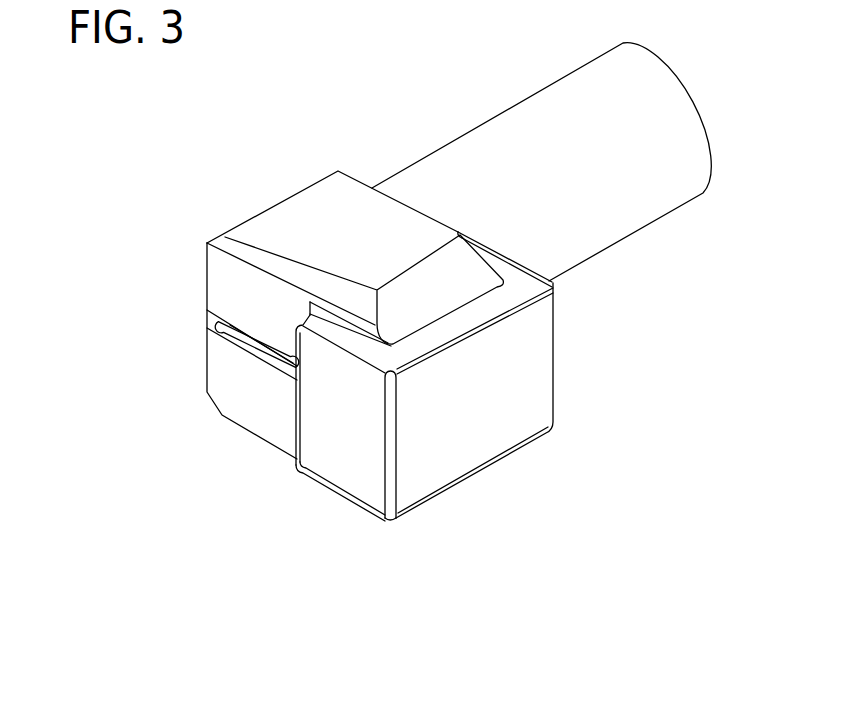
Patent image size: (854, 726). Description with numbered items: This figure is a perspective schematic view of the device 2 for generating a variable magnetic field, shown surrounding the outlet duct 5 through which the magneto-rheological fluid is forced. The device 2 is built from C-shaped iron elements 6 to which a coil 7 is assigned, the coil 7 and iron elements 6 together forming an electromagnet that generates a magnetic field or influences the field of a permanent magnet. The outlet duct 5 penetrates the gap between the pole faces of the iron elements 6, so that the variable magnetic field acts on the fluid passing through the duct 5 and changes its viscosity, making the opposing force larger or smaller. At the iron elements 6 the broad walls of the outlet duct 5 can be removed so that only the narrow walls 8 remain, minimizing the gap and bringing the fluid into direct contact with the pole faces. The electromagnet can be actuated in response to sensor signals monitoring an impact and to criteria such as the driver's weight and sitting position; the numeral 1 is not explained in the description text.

The cylindrical housing 1 is at (545, 128).
The device for generating a variable magnetic field 2 is at (526, 376).
The outlet duct 5 is at (260, 348).
The C-shaped iron elements 6 is at (288, 263).
The coil 7 is at (497, 392).
The narrow walls 8 is at (215, 321).